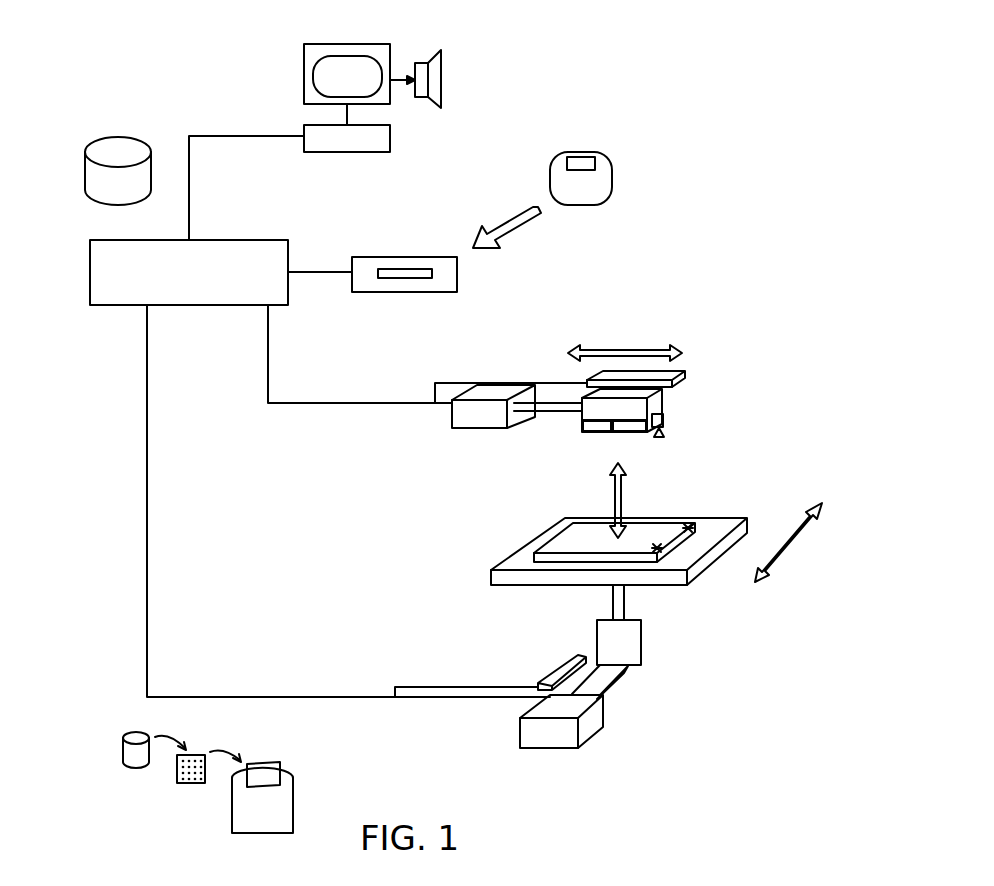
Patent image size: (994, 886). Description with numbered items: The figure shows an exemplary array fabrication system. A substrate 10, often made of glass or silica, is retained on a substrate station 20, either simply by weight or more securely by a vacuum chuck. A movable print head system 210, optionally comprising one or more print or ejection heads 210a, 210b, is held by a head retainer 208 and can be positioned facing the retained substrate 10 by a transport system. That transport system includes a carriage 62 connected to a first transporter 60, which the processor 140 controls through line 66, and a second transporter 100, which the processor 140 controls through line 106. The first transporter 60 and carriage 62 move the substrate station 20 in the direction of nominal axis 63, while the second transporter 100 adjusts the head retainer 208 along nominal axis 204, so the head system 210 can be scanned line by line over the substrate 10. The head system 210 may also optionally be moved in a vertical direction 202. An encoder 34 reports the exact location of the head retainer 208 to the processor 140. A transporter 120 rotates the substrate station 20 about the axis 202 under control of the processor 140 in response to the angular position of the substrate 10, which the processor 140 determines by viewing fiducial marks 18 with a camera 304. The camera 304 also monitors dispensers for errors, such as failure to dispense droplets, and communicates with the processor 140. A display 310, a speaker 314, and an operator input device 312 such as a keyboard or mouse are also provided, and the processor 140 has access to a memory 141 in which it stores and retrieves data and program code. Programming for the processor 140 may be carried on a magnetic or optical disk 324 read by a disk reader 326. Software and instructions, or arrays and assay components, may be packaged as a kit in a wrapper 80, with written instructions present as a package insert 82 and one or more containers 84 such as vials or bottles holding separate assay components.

The substrate 10 is at (577, 540).
The fiducial marks 18 is at (658, 549).
The substrate station 20 is at (497, 543).
The encoder 34 is at (680, 380).
The first transporter 60 is at (588, 738).
The carriage 62 is at (614, 689).
The nominal axis 63 is at (800, 537).
The line 66 is at (147, 440).
The wrapper 80 is at (232, 808).
The package insert 82 is at (280, 770).
The container 84 is at (123, 748).
The second transporter 100 is at (452, 414).
The line 106 is at (317, 403).
The transporter 120 is at (641, 645).
The processor 140 is at (89, 263).
The memory 141 is at (116, 148).
The vertical direction 202 is at (621, 490).
The nominal axis 204 is at (623, 348).
The head retainer 208 is at (655, 403).
The print head system 210 is at (583, 428).
The print head 210a is at (598, 430).
The print head 210b is at (635, 432).
The camera 304 is at (665, 418).
The display 310 is at (304, 68).
The operator input device 312 is at (347, 152).
The speaker 314 is at (441, 80).
The magnetic or optical disk 324 is at (612, 165).
The disk reader 326 is at (401, 257).